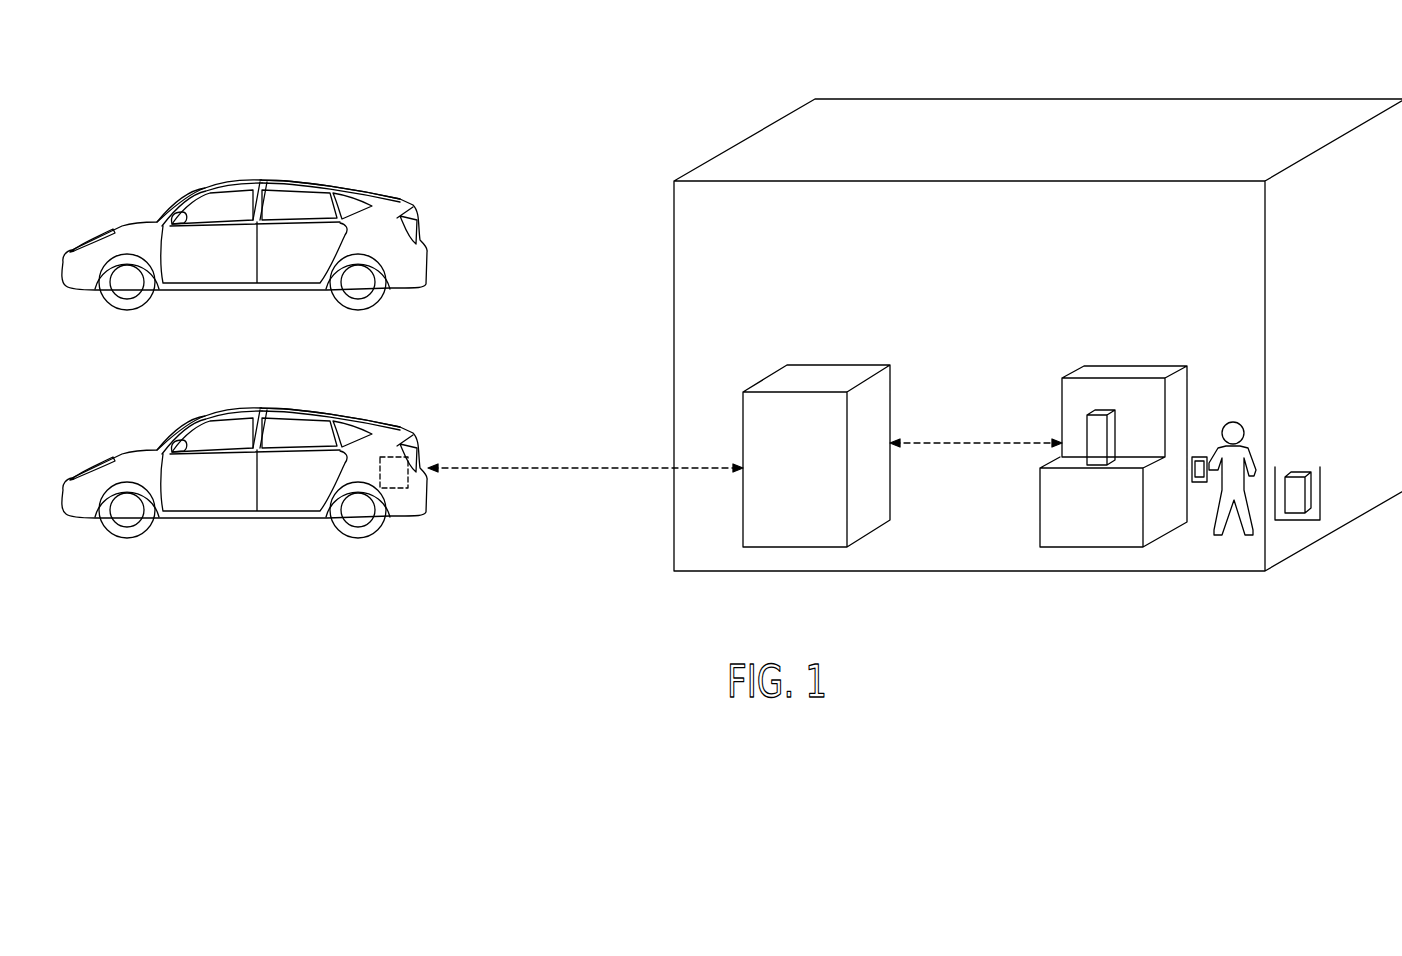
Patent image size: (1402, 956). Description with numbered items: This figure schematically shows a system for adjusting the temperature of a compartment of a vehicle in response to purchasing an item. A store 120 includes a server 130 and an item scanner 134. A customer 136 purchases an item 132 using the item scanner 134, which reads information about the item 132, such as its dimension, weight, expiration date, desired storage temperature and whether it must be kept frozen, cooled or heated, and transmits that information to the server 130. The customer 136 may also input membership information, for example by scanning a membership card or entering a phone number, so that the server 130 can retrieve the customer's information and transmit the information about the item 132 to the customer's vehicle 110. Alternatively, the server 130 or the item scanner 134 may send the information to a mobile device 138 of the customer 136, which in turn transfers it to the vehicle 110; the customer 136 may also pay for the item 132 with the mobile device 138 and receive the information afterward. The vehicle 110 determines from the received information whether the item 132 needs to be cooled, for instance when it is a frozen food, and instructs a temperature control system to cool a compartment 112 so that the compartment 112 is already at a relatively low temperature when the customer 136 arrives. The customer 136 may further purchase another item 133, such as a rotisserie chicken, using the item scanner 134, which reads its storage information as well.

The vehicle 110 is at (267, 404).
The compartment 112 is at (408, 490).
The store 120 is at (1163, 99).
The server 130 is at (832, 364).
The item 132 is at (1084, 427).
The item 133 is at (1300, 472).
The item scanner 134 is at (1130, 365).
The customer 136 is at (1233, 422).
The mobile device 138 is at (1198, 483).